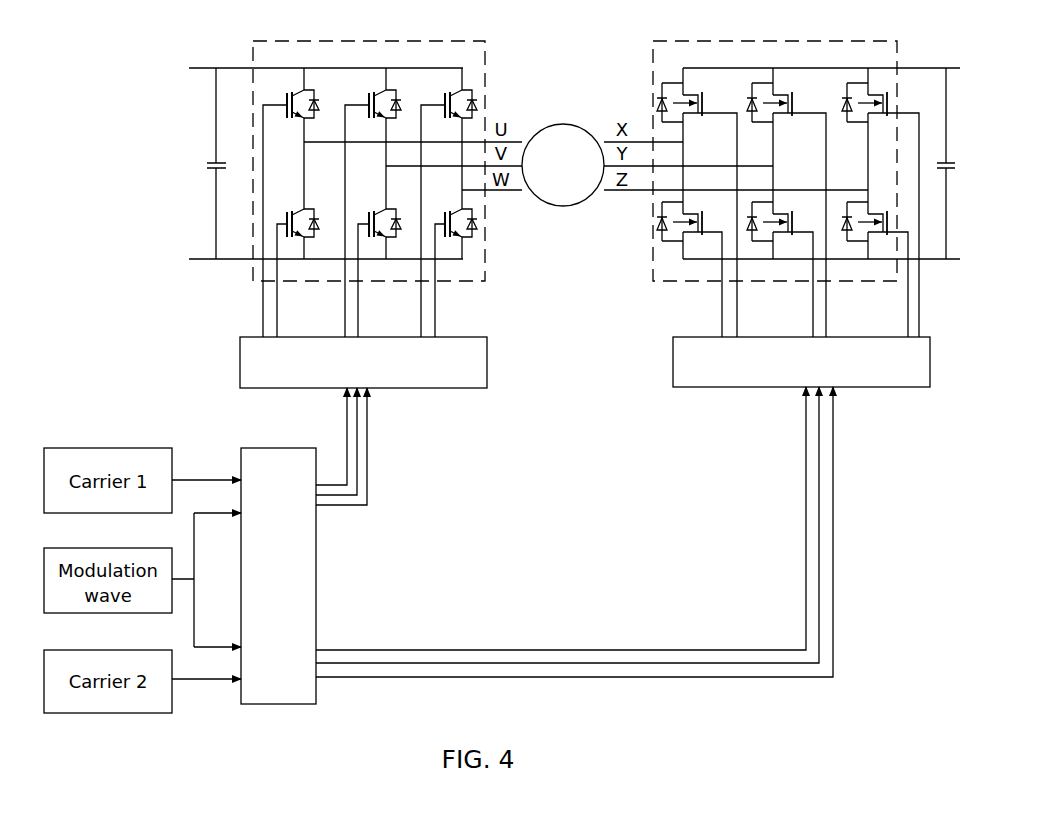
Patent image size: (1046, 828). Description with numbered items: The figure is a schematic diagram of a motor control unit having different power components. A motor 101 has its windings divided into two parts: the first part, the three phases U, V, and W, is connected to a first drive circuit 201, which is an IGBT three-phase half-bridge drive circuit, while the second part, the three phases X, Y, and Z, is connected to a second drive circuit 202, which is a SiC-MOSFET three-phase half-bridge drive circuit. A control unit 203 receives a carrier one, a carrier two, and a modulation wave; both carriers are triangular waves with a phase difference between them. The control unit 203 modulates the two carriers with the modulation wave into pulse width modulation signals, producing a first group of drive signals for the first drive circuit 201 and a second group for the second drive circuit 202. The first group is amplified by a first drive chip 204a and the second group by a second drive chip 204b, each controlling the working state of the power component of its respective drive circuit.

The motor 101 is at (559, 124).
The first drive circuit 201 is at (367, 41).
The second drive circuit 202 is at (773, 41).
The control unit 203 is at (316, 573).
The first drive chip 204a is at (363, 362).
The second drive chip 204b is at (801, 362).